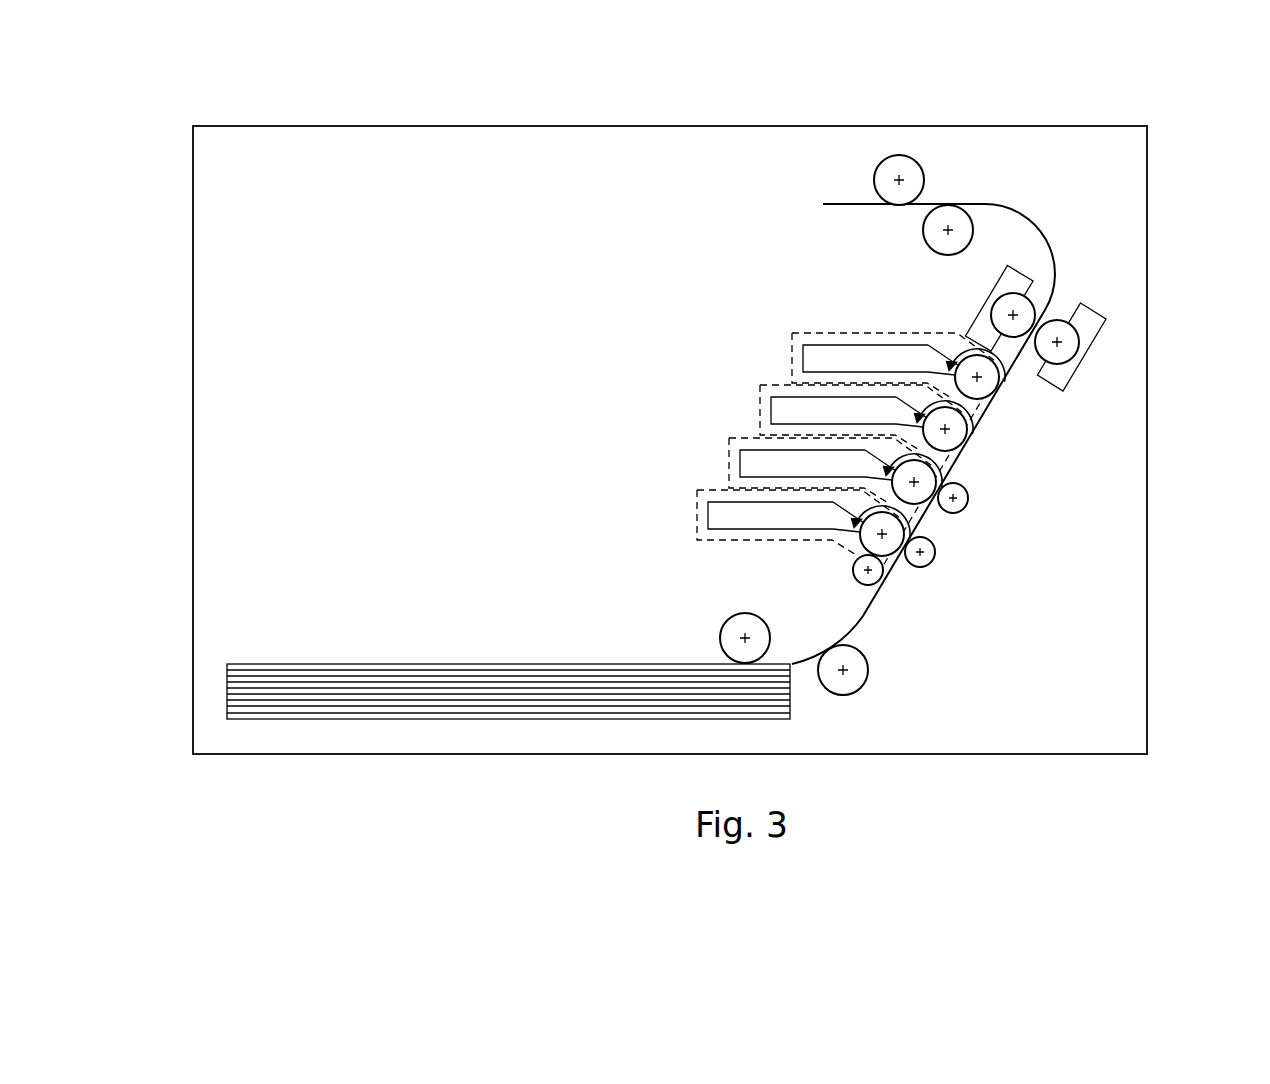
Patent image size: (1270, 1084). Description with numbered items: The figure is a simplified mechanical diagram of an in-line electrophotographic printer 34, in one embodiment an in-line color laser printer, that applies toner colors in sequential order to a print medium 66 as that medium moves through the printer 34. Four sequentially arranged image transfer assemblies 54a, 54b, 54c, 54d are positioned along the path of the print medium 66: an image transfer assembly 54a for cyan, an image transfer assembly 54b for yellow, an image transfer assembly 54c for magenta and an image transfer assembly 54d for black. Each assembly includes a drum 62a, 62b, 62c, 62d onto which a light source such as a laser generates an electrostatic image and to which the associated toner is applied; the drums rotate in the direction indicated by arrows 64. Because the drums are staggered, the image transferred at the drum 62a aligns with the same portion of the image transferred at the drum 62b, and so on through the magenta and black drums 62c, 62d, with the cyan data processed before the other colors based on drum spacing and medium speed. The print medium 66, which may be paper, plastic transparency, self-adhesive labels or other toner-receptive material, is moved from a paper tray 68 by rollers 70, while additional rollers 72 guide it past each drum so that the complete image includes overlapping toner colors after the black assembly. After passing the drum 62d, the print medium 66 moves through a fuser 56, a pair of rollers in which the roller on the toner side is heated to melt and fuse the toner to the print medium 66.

The printer 34 is at (553, 126).
The image transfer assembly for cyan 54a is at (697, 503).
The image transfer assembly for yellow 54b is at (729, 450).
The image transfer assembly for magenta 54c is at (760, 398).
The image transfer assembly for black 54d is at (792, 345).
The fuser 56 is at (1092, 313).
The drum 62a is at (940, 532).
The drum 62b is at (950, 470).
The drum 62c is at (982, 420).
The drum 62d is at (1000, 368).
The arrows 64 is at (975, 430).
The print medium 66 is at (1057, 250).
The paper tray 68 is at (273, 663).
The rollers 70 is at (720, 638).
The additional rollers 72 is at (890, 155).